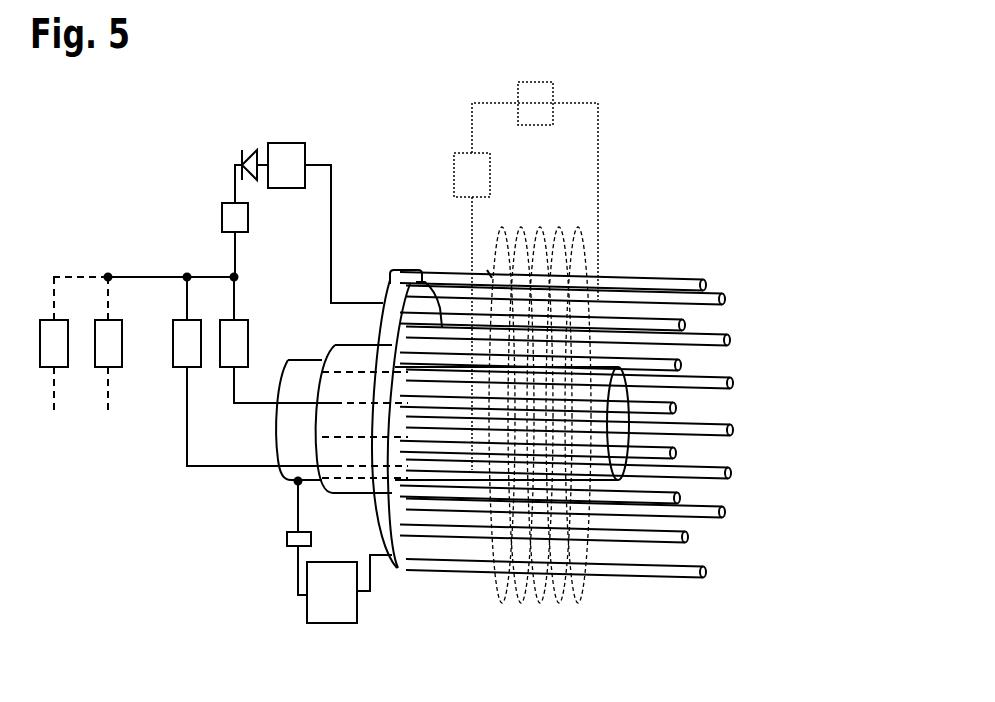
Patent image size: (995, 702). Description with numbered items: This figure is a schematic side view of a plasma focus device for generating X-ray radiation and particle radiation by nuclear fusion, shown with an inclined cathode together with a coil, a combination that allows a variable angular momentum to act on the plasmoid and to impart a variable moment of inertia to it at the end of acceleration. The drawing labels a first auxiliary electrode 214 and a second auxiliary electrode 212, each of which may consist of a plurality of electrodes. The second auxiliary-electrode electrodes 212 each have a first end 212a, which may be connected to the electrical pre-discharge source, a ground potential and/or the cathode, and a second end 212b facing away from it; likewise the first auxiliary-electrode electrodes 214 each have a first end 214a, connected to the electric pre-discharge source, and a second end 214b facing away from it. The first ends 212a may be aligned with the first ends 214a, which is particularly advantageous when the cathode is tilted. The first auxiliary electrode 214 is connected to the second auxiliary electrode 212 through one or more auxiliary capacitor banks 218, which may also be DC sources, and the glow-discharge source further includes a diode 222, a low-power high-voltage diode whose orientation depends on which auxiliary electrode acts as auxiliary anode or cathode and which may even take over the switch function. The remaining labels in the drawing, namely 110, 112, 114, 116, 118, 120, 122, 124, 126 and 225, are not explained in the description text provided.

The device 110 is at (788, 160).
The tubes 112 is at (706, 285).
The drive circuit 114 is at (290, 437).
The rotor 116 is at (340, 490).
The sensor 118 is at (287, 538).
The control unit 120 is at (307, 612).
The evaluation unit 122 is at (598, 130).
The power supply 124 is at (537, 82).
The measuring unit 126 is at (453, 168).
The second auxiliary electrode 212 is at (460, 335).
The first end of second auxiliary electrode 212a is at (416, 282).
The second end of second auxiliary electrode 212b is at (487, 270).
The first auxiliary electrode 214 is at (395, 568).
The first end of first auxiliary electrode 214a is at (317, 370).
The second end of first auxiliary electrode 214b is at (515, 477).
The auxiliary capacitor bank 218 is at (222, 215).
The diode 222 is at (242, 158).
The switching element 225 is at (285, 143).